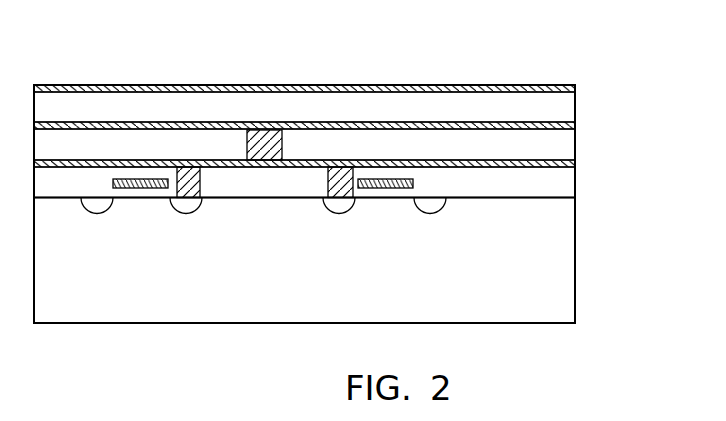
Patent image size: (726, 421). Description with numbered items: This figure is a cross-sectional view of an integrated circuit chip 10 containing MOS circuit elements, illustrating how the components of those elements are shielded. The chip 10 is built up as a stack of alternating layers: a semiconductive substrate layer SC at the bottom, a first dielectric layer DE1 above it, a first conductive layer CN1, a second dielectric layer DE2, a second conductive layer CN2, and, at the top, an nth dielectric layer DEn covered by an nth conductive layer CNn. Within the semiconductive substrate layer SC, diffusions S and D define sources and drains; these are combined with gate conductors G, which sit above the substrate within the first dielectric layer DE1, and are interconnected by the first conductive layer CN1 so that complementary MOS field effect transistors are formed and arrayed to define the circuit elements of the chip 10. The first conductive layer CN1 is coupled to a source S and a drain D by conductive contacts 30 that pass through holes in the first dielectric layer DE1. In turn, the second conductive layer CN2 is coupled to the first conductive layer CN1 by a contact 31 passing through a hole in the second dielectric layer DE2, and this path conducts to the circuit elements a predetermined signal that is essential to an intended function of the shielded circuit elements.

The chip 10 is at (151, 79).
The contact 31 is at (247, 140).
The conductive contacts 30 is at (200, 173).
The gate conductors G is at (113, 182).
The source diffusion S is at (218, 219).
The drain diffusion D is at (308, 219).
The nth conductive layer CNn is at (575, 87).
The nth dielectric layer DEn is at (575, 104).
The second conductive layer CN2 is at (575, 123).
The second dielectric layer DE2 is at (575, 139).
The first conductive layer CN1 is at (575, 163).
The first dielectric layer DE1 is at (575, 183).
The semiconductive substrate layer SC is at (575, 288).